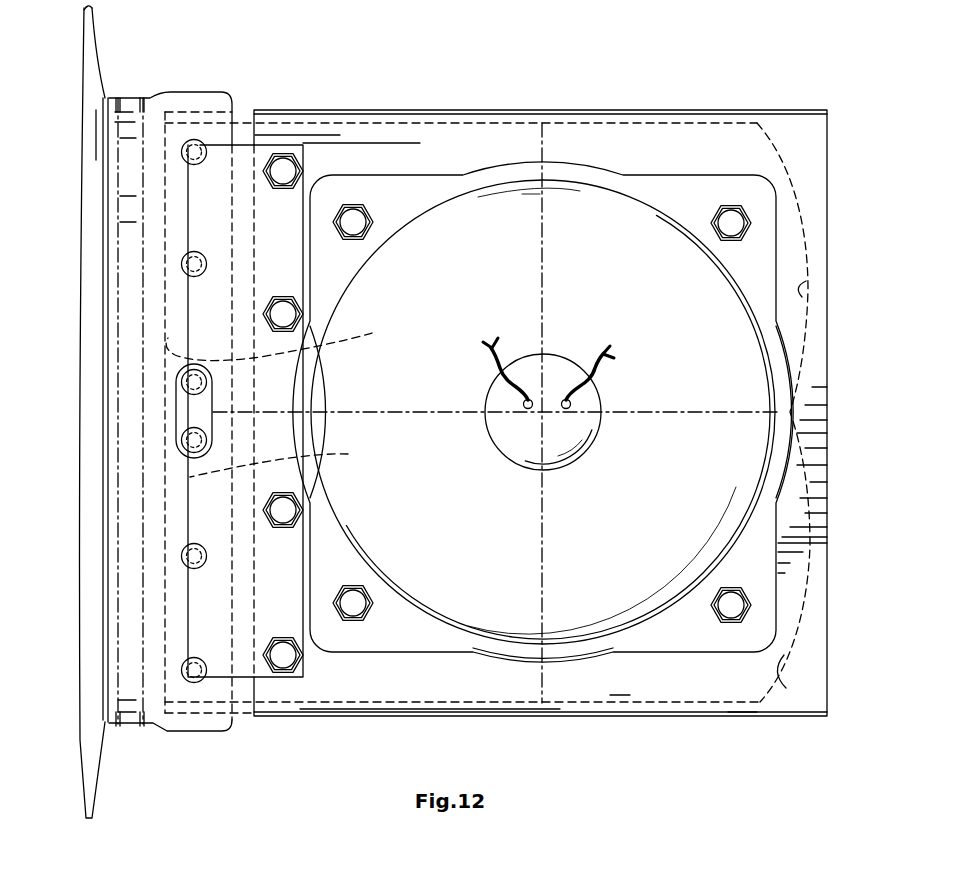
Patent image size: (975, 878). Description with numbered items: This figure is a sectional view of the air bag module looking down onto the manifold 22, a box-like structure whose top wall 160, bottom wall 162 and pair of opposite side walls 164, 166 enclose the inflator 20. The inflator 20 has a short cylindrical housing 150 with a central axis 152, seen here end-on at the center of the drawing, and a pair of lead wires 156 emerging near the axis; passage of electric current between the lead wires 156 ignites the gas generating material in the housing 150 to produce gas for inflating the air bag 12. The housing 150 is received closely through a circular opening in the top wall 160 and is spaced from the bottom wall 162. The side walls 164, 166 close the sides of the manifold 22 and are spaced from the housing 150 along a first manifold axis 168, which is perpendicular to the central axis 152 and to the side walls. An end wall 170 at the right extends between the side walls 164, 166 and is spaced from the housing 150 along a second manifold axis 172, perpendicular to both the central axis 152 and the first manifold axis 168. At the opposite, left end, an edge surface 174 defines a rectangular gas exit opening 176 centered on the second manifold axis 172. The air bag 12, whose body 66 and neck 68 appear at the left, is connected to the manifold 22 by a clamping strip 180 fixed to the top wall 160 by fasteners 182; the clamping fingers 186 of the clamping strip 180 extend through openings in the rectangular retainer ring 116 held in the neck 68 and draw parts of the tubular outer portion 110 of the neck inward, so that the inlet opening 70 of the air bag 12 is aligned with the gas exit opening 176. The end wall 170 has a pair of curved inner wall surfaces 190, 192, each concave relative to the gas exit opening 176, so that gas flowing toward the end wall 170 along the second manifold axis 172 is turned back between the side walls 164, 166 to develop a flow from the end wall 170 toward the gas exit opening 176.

The inflatable vehicle occupant restraint 12 is at (101, 27).
The inflator 20 is at (513, 166).
The manifold 22 is at (831, 102).
The body 66 is at (112, 67).
The neck 68 is at (199, 88).
The inlet opening 70 is at (246, 278).
The tubular outer portion 110 is at (130, 203).
The retainer ring 116 is at (236, 127).
The housing 150 is at (599, 215).
The central axis 152 is at (541, 414).
The lead wires 156 is at (587, 378).
The top wall 160 is at (733, 150).
The bottom wall 162 is at (712, 682).
The side wall 164 is at (672, 112).
The side wall 166 is at (616, 715).
The first manifold axis 168 is at (540, 290).
The end wall 170 is at (827, 285).
The second manifold axis 172 is at (660, 412).
The edge surface 174 is at (288, 340).
The gas exit opening 176 is at (280, 463).
The clamping strip 180 is at (200, 328).
The fasteners 182 is at (285, 655).
The clamping fingers 186 is at (184, 152).
The curved inner wall surface 190 is at (808, 300).
The curved inner wall surface 192 is at (786, 688).